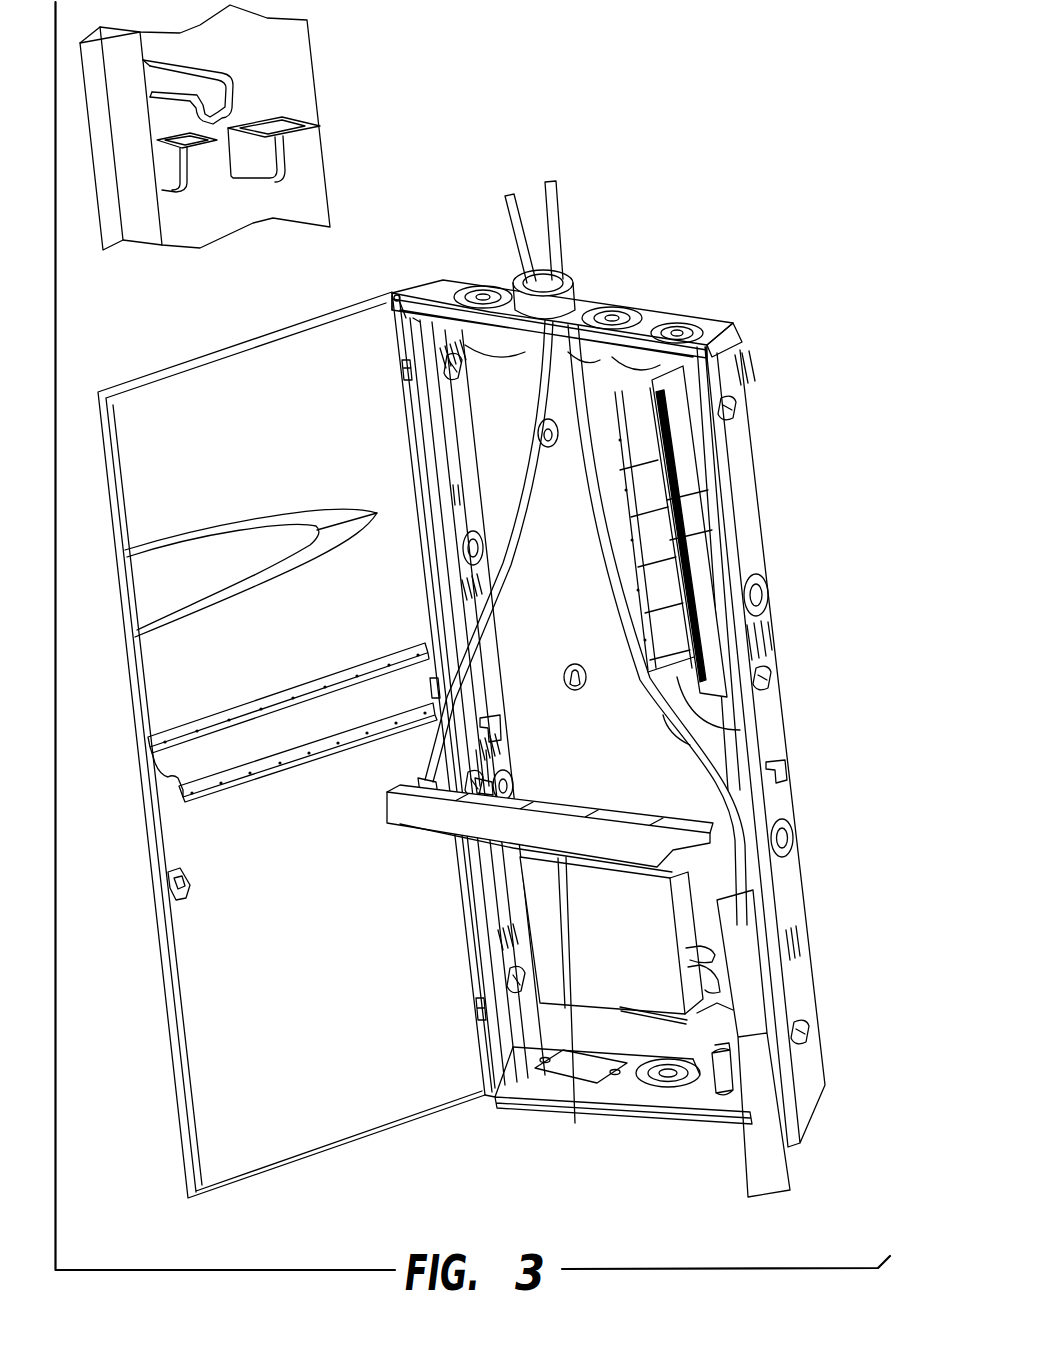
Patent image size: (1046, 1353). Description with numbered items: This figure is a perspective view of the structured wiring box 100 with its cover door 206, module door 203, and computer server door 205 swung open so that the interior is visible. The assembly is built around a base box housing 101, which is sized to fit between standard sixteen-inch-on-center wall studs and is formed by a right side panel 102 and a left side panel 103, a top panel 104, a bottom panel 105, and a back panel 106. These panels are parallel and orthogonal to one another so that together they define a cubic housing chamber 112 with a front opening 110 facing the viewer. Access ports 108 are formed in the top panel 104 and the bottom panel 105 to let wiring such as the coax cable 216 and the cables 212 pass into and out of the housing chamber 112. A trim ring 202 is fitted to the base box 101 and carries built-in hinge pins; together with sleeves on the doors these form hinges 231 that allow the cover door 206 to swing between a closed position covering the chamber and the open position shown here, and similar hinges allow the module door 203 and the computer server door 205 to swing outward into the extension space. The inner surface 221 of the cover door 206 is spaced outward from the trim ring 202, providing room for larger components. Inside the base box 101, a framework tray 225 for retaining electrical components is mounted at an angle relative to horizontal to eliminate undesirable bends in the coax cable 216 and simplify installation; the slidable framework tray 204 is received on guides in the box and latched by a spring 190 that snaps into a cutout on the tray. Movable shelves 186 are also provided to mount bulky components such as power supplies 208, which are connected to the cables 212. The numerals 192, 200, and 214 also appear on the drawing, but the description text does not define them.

The structured wiring box 100 is at (687, 1227).
The base box housing 101 is at (596, 290).
The right side panel 102 is at (800, 863).
The left side panel 103 is at (457, 452).
The top panel 104 is at (718, 324).
The bottom panel 105 is at (712, 1090).
The back panel 106 is at (618, 783).
The access ports 108 is at (483, 294).
The front opening 110 is at (549, 1068).
The housing chamber 112 is at (606, 366).
The movable shelves 186 is at (587, 850).
The spring 190 is at (236, 70).
The tray support 192 is at (235, 96).
The hinge 200 is at (394, 292).
The trim ring 202 is at (615, 1127).
The module door 203 is at (708, 458).
The framework tray 204 is at (663, 715).
The computer server door 205 is at (770, 1196).
The cover door 206 is at (320, 1168).
The power supplies 208 is at (626, 925).
The cables 212 is at (558, 197).
The terminal block 214 is at (742, 730).
The coax cable 216 is at (508, 226).
The inner surface 221 is at (331, 976).
The framework tray 225 is at (405, 825).
The hinges 231 is at (398, 372).